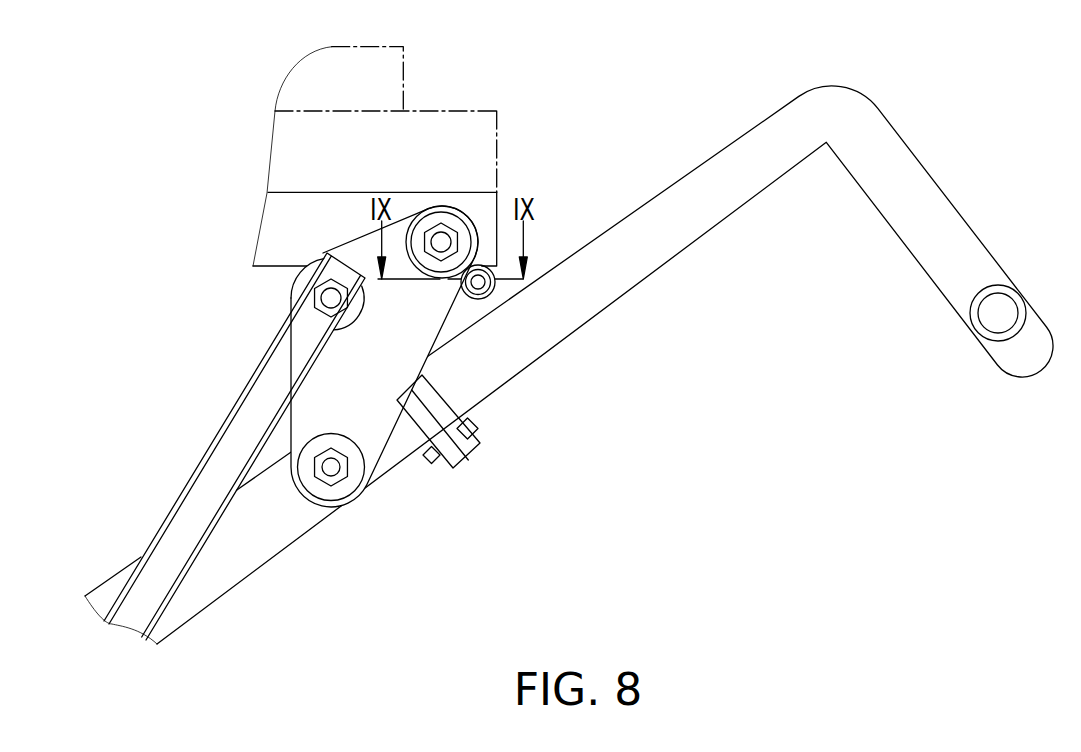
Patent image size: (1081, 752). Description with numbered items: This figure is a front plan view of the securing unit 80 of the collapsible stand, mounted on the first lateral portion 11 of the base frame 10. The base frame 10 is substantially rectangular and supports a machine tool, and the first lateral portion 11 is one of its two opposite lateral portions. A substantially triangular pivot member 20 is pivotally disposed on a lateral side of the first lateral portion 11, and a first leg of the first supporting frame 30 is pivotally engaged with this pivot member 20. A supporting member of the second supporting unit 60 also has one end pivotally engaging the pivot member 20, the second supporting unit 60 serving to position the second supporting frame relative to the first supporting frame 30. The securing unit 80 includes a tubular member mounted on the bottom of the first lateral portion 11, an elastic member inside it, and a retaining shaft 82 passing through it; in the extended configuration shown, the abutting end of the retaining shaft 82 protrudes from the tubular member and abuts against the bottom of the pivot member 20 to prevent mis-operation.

The base frame 10 is at (340, 151).
The first lateral portion 11 is at (488, 207).
The pivot member 20 is at (383, 449).
The first supporting frame 30 is at (272, 558).
The second supporting unit 60 is at (195, 460).
The securing unit 80 is at (494, 294).
The retaining shaft 82 is at (478, 284).